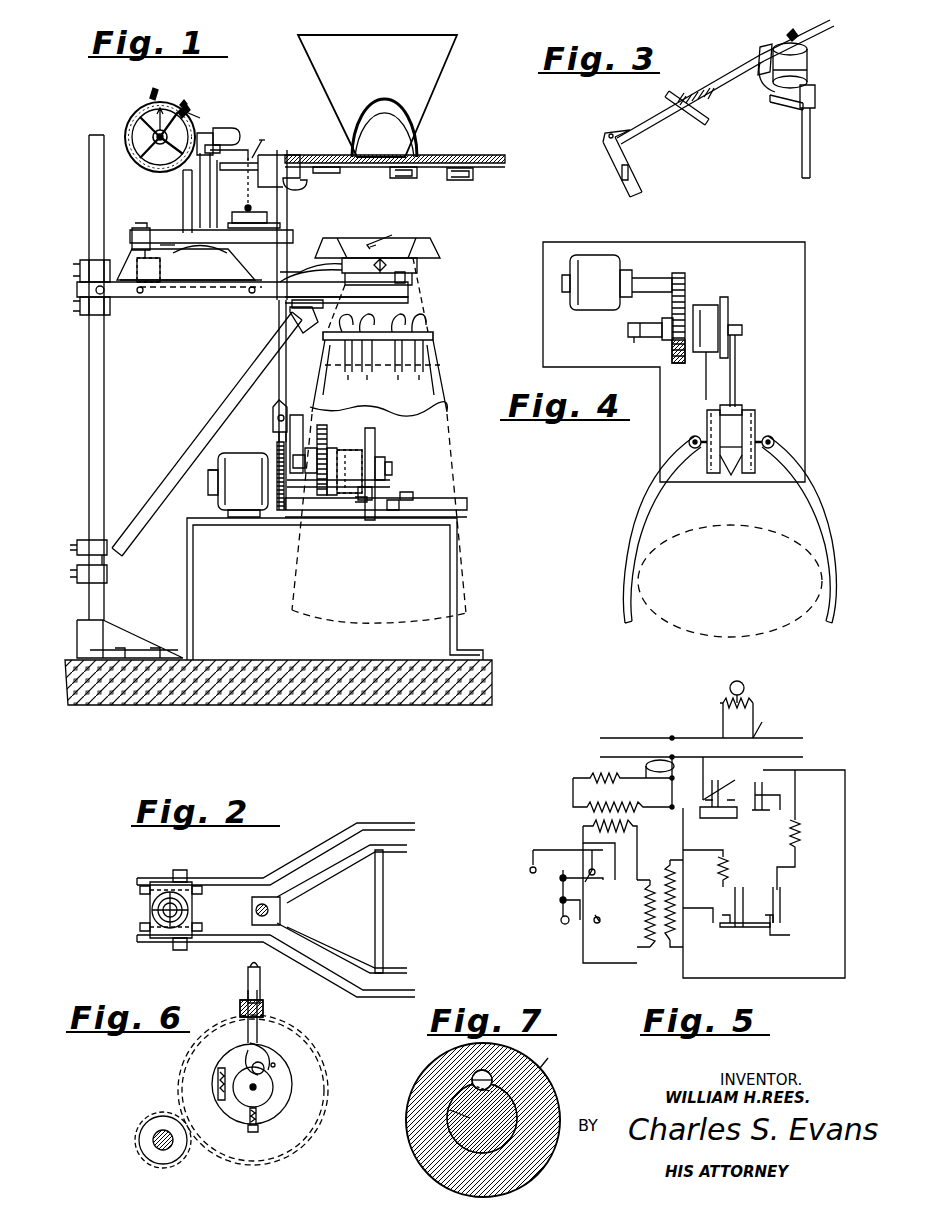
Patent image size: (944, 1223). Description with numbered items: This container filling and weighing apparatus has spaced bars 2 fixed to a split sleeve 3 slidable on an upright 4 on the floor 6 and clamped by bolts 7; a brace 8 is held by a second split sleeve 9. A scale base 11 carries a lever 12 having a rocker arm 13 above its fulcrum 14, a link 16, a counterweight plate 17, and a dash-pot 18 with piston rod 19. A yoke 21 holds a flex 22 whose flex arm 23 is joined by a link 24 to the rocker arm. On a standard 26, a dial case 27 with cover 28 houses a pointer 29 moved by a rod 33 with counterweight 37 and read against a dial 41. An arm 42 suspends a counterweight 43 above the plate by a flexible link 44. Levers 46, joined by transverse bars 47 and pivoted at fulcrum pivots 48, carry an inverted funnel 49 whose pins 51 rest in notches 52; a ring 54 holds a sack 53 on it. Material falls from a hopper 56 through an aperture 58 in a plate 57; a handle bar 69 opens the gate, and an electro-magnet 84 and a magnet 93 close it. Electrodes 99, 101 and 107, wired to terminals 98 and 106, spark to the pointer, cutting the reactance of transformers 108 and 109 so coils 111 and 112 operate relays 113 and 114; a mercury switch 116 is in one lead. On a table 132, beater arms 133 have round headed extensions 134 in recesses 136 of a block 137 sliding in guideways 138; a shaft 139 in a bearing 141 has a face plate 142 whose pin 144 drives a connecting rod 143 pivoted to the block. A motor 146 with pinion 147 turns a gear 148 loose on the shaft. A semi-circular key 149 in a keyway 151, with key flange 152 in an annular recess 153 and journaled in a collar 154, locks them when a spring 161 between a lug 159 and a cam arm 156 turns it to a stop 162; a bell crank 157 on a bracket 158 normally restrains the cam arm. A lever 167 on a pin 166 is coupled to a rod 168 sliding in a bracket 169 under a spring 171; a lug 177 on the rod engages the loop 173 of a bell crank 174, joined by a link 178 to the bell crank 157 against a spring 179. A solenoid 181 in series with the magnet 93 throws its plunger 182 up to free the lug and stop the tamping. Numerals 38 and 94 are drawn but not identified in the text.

In FIG. 1, the spaced bars 2 is at (74, 290).
In FIG. 2, the spaced bars 2 is at (310, 855).
In FIG. 1, the split sleeve 3 is at (88, 308).
In FIG. 2, the split sleeve 3 is at (150, 908).
In FIG. 1, the upright 4 is at (98, 396).
In FIG. 2, the upright 4 is at (192, 911).
In FIG. 1, the floor 6 is at (165, 700).
In FIG. 1, the bolts 7 is at (87, 258).
In FIG. 2, the bolts 7 is at (140, 889).
In FIG. 1, the brace 8 is at (210, 428).
In FIG. 1, the split sleeve 9 is at (102, 540).
In FIG. 1, the scale base 11 is at (210, 288).
In FIG. 1, the lever 12 is at (293, 237).
In FIG. 1, the rocker arm 13 is at (183, 197).
In FIG. 1, the fulcrum 14 is at (183, 255).
In FIG. 1, the link 16 is at (136, 245).
In FIG. 2, the link 16 is at (280, 910).
In FIG. 1, the counterweight carrying plate 17 is at (287, 222).
In FIG. 1, the dash-pot 18 is at (160, 297).
In FIG. 1, the piston rod 19 is at (146, 244).
In FIG. 1, the yoke 21 is at (215, 251).
In FIG. 1, the flex 22 is at (234, 186).
In FIG. 1, the flex arm 23 is at (236, 190).
In FIG. 1, the link 24 is at (211, 165).
In FIG. 1, the standard 26 is at (170, 182).
In FIG. 1, the dial case 27 is at (128, 142).
In FIG. 1, the transparent cover 28 is at (197, 107).
In FIG. 1, the pointer 29 is at (150, 160).
In FIG. 5, the pointer 29 is at (560, 917).
In FIG. 1, the rod 33 is at (210, 133).
In FIG. 1, the counterweight 37 is at (236, 132).
In FIG. 1, the bracket 38 is at (221, 150).
In FIG. 1, the graduated circular dial 41 is at (146, 112).
In FIG. 1, the arm 42 is at (233, 177).
In FIG. 1, the counterweight 43 is at (280, 224).
In FIG. 1, the flexible suspending link 44 is at (254, 209).
In FIG. 1, the levers 46 is at (304, 278).
In FIG. 2, the levers 46 is at (325, 872).
In FIG. 1, the transverse bars 47 is at (287, 303).
In FIG. 2, the transverse bars 47 is at (383, 891).
In FIG. 1, the fulcrum pivots 48 is at (405, 277).
In FIG. 1, the inverted funnel 49 is at (430, 243).
In FIG. 1, the pins 51 is at (386, 233).
In FIG. 1, the notches 52 is at (346, 292).
In FIG. 1, the sack 53 is at (440, 372).
In FIG. 4, the sack 53 is at (686, 630).
In FIG. 1, the ring 54 is at (433, 337).
In FIG. 1, the hopper 56 is at (445, 60).
In FIG. 1, the plate 57 is at (435, 152).
In FIG. 1, the aperture 58 is at (368, 152).
In FIG. 1, the handle bar 69 is at (488, 164).
In FIG. 1, the electro-magnet 84 is at (398, 178).
In FIG. 5, the electro-magnet 84 is at (767, 800).
In FIG. 1, the magnet 93 is at (473, 178).
In FIG. 5, the magnet 93 is at (782, 897).
In FIG. 1, the spoke 94 is at (134, 128).
In FIG. 1, the terminal 98 is at (165, 87).
In FIG. 5, the electrode 99 is at (530, 872).
In FIG. 5, the electrode 101 is at (583, 885).
In FIG. 1, the terminal 106 is at (186, 100).
In FIG. 5, the electrode 107 is at (598, 924).
In FIG. 5, the transformer 108 is at (637, 824).
In FIG. 5, the second transformer 109 is at (655, 880).
In FIG. 5, the current limiting coil 111 is at (590, 776).
In FIG. 5, the current limiting coil 112 is at (728, 862).
In FIG. 5, the relay 113 is at (725, 790).
In FIG. 5, the relay 114 is at (745, 895).
In FIG. 1, the mercury switch 116 is at (338, 173).
In FIG. 5, the mercury switch 116 is at (646, 766).
In FIG. 1, the table 132 is at (390, 524).
In FIG. 4, the table 132 is at (743, 250).
In FIG. 1, the beater arms 133 is at (312, 510).
In FIG. 4, the beater arms 133 is at (633, 526).
In FIG. 5, the beater arms 133 is at (765, 722).
In FIG. 1, the round headed extension 134 is at (398, 498).
In FIG. 4, the round headed extension 134 is at (770, 441).
In FIG. 4, the recesses 136 is at (728, 473).
In FIG. 1, the block 137 is at (370, 503).
In FIG. 4, the block 137 is at (747, 467).
In FIG. 1, the guideways 138 is at (413, 495).
In FIG. 4, the guideways 138 is at (707, 419).
In FIG. 1, the shaft 139 is at (350, 463).
In FIG. 4, the shaft 139 is at (705, 305).
In FIG. 6, the shaft 139 is at (273, 1088).
In FIG. 7, the shaft 139 is at (460, 1133).
In FIG. 1, the bearing 141 is at (334, 445).
In FIG. 4, the bearing 141 is at (710, 376).
In FIG. 1, the face plate 142 is at (378, 430).
In FIG. 4, the face plate 142 is at (728, 300).
In FIG. 1, the connecting rod 143 is at (385, 468).
In FIG. 4, the connecting rod 143 is at (735, 365).
In FIG. 1, the pin 144 is at (386, 462).
In FIG. 4, the pin 144 is at (742, 328).
In FIG. 1, the motor 146 is at (230, 460).
In FIG. 4, the motor 146 is at (593, 305).
In FIG. 5, the motor 146 is at (750, 690).
In FIG. 1, the pinion 147 is at (328, 517).
In FIG. 4, the pinion 147 is at (678, 278).
In FIG. 6, the pinion 147 is at (138, 1142).
In FIG. 1, the gear 148 is at (318, 427).
In FIG. 4, the gear 148 is at (672, 362).
In FIG. 6, the gear 148 is at (310, 1050).
In FIG. 7, the gear 148 is at (545, 1082).
In FIG. 6, the key 149 is at (255, 1063).
In FIG. 7, the key 149 is at (465, 1090).
In FIG. 7, the keyway 151 is at (470, 1077).
In FIG. 7, the key flange 152 is at (415, 1118).
In FIG. 7, the annular recess 153 is at (558, 1054).
In FIG. 6, the collar 154 is at (265, 1115).
In FIG. 1, the cam arm 156 is at (238, 485).
In FIG. 6, the cam arm 156 is at (263, 1060).
In FIG. 1, the bell crank 157 is at (278, 408).
In FIG. 4, the bell crank 157 is at (640, 344).
In FIG. 6, the bell crank 157 is at (257, 1022).
In FIG. 1, the bracket 158 is at (279, 442).
In FIG. 4, the bracket 158 is at (646, 325).
In FIG. 6, the bracket 158 is at (248, 1050).
In FIG. 6, the lug 159 is at (222, 1100).
In FIG. 6, the spring 161 is at (253, 1088).
In FIG. 6, the stop 162 is at (278, 1066).
In FIG. 3, the pin 166 is at (630, 172).
In FIG. 3, the lever 167 is at (612, 168).
In FIG. 3, the rod 168 is at (658, 124).
In FIG. 3, the bracket 169 is at (704, 121).
In FIG. 3, the spring 171 is at (694, 94).
In FIG. 3, the loop 173 is at (758, 62).
In FIG. 3, the bell crank 174 is at (770, 98).
In FIG. 3, the lug 177 is at (807, 54).
In FIG. 1, the link 178 is at (279, 320).
In FIG. 3, the link 178 is at (802, 156).
In FIG. 2, the link 178 is at (260, 985).
In FIG. 1, the spring 179 is at (292, 482).
In FIG. 1, the solenoid 181 is at (264, 142).
In FIG. 3, the solenoid 181 is at (810, 74).
In FIG. 5, the solenoid 181 is at (800, 833).
In FIG. 3, the plunger 182 is at (787, 35).